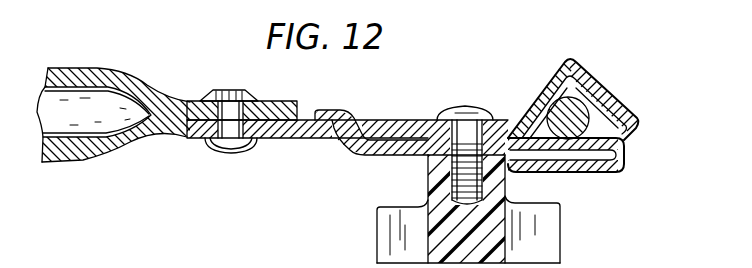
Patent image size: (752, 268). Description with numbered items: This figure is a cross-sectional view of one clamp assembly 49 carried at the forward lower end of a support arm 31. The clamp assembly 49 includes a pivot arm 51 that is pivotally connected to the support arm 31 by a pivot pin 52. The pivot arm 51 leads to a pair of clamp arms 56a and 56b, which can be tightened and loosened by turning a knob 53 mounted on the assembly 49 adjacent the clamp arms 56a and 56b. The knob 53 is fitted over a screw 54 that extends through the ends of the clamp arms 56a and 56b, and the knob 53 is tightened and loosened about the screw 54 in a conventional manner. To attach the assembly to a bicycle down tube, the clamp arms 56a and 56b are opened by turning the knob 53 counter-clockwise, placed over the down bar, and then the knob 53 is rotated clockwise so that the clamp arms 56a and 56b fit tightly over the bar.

The support arm 31 is at (140, 80).
The pivot arm 51 is at (277, 138).
The pivot pin 52 is at (228, 90).
The clamp assembly 49 is at (328, 163).
The screw 54 is at (436, 118).
The knob 53 is at (550, 245).
The clamp arm 56a is at (583, 172).
The clamp arm 56b is at (600, 90).